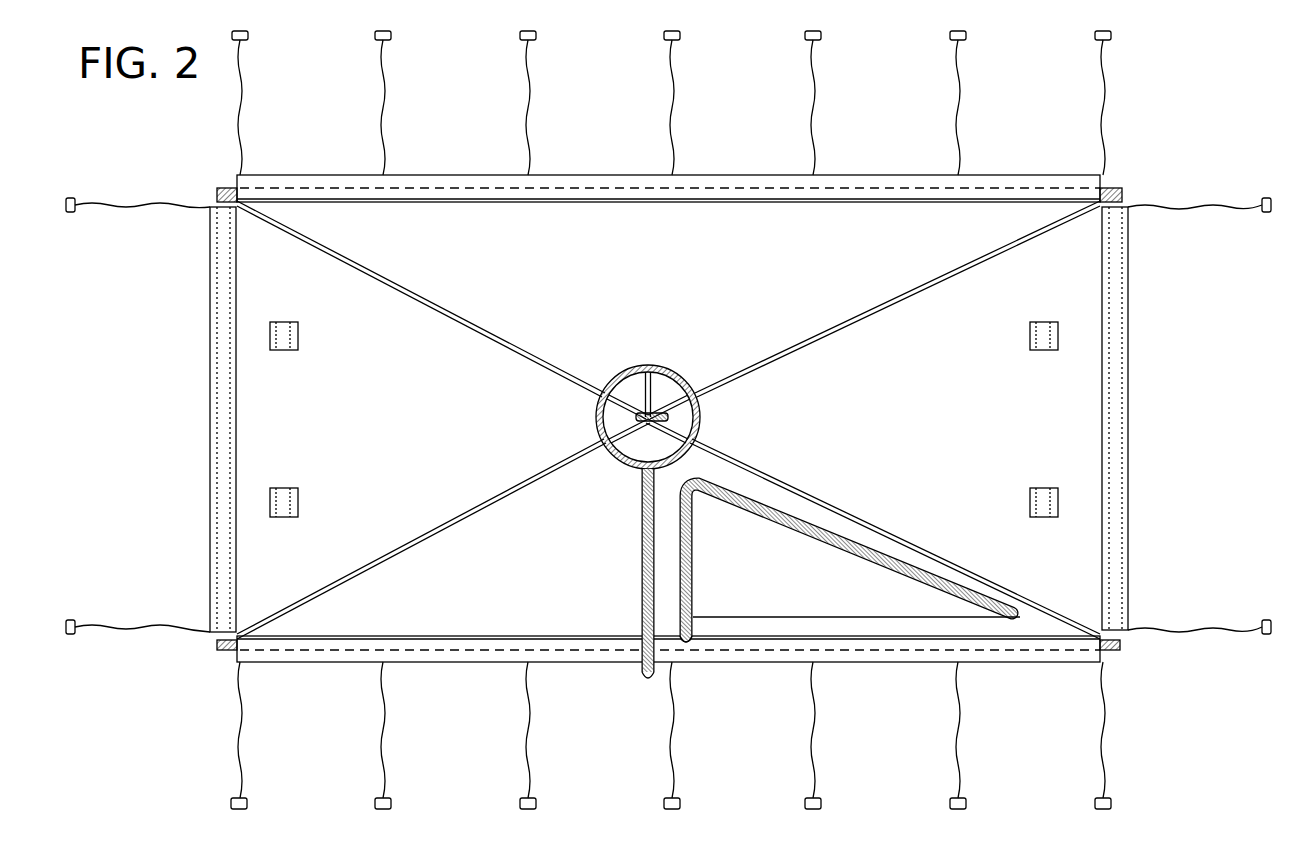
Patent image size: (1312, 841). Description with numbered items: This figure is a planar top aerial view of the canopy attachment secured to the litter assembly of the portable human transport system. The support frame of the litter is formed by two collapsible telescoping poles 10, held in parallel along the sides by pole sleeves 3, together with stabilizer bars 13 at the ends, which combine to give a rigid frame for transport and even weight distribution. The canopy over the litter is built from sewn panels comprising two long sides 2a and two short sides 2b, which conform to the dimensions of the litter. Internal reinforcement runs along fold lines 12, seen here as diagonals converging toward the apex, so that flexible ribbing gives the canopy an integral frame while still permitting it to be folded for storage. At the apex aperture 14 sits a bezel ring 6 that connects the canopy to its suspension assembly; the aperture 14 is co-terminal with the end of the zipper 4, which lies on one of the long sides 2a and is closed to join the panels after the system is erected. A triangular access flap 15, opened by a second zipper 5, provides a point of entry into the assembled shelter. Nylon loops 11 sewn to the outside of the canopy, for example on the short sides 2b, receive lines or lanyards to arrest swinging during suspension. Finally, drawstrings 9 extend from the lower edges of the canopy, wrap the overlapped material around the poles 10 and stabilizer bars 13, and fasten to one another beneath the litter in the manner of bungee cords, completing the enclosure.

The long side 2a is at (634, 275).
The short side 2b is at (453, 418).
The pole sleeve 3 is at (722, 180).
The zipper 4 is at (641, 540).
The zipper 5 is at (790, 516).
The bezel ring 6 is at (700, 417).
The drawstring 9 is at (526, 105).
The telescoping pole 10 is at (1118, 188).
The nylon loop 11 is at (298, 335).
The fold line 12 is at (413, 292).
The stabilizer bar 13 is at (208, 445).
The apex aperture 14 is at (688, 371).
The access flap 15 is at (803, 595).